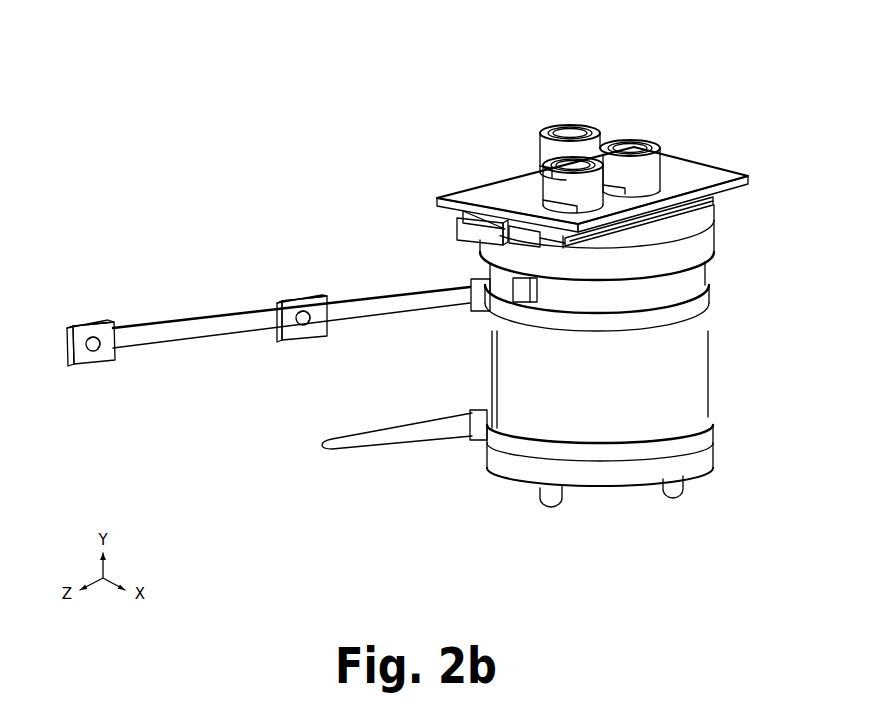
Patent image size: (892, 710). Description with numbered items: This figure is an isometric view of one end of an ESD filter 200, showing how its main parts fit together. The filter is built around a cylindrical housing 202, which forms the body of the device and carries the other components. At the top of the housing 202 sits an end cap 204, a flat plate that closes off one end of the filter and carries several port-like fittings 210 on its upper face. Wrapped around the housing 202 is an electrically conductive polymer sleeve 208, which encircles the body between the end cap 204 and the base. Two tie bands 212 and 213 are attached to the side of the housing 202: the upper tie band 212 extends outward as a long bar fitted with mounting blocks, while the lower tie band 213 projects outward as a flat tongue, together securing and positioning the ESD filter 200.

The ESD filter 200 is at (378, 68).
The housing 202 is at (613, 493).
The end cap 204 is at (703, 172).
The electrically conductive polymer sleeve 208 is at (708, 340).
The connector ports 210 is at (577, 165).
The tie band 212 is at (160, 338).
The tie band 213 is at (365, 445).